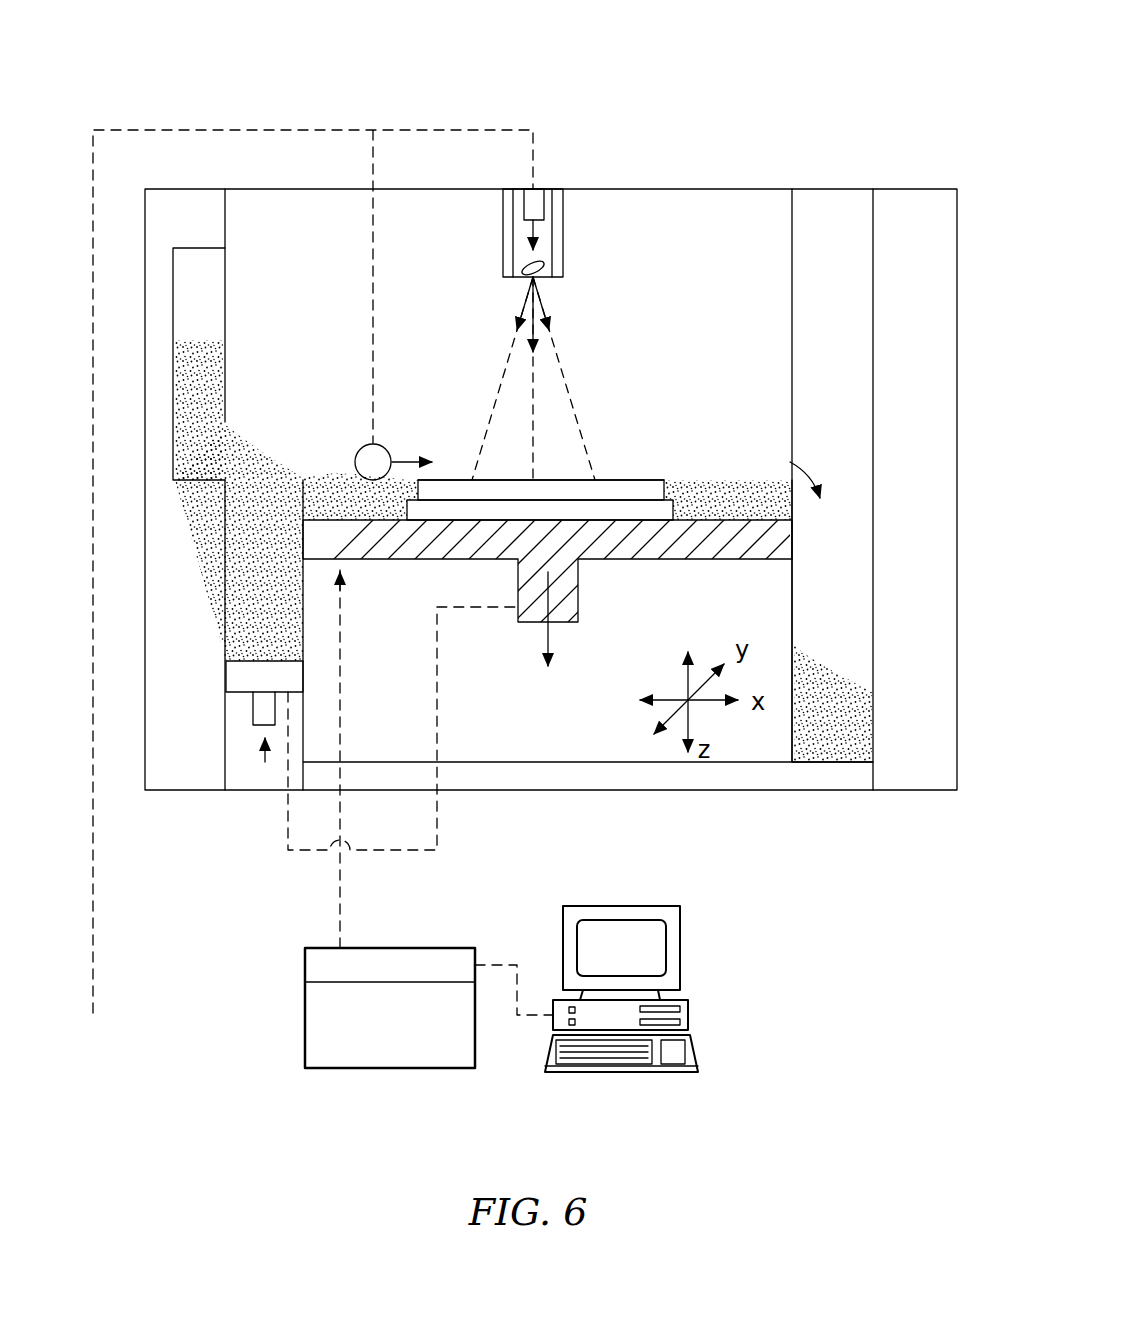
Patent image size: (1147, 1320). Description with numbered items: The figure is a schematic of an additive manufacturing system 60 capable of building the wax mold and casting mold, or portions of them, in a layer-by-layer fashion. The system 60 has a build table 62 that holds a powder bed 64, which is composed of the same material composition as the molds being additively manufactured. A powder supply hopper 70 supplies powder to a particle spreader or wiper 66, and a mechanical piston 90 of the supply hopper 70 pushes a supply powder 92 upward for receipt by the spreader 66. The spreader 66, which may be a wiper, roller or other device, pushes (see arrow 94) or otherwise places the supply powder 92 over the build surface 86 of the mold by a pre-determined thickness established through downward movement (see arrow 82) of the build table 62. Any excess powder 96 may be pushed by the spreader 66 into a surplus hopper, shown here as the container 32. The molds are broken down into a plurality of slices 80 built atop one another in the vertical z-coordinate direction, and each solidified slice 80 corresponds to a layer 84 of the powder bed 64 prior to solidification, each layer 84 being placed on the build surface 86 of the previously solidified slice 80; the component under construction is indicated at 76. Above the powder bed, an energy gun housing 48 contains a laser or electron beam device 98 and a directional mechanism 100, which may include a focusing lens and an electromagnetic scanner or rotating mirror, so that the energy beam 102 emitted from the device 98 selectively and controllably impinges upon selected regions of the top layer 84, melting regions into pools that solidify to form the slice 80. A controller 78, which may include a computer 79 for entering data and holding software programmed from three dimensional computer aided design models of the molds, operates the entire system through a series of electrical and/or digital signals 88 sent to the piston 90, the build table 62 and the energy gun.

The additive manufacturing system 60 is at (787, 97).
The electrical and/or digital signals 88 is at (276, 128).
The laser or electron beam device 98 is at (540, 197).
The laser device housing 48 is at (575, 224).
The directional mechanism 100 is at (540, 280).
The energy beam 102 is at (508, 312).
The powder supply hopper 70 is at (212, 303).
The supply powder 92 is at (233, 455).
The particle spreader or wiper 66 is at (362, 446).
The arrow 94 is at (403, 458).
The layer of the powder bed 84 is at (325, 476).
The slice 80 is at (466, 512).
The component being built 76 is at (624, 466).
The build surface 86 is at (656, 479).
The powder bed 64 is at (726, 478).
The build table 62 is at (660, 574).
The arrow 82 is at (550, 642).
The mechanical piston 90 is at (246, 690).
The overflow container 32 is at (817, 628).
The excess powder 96 is at (845, 713).
The controller 78 is at (325, 1046).
The computer 79 is at (683, 938).